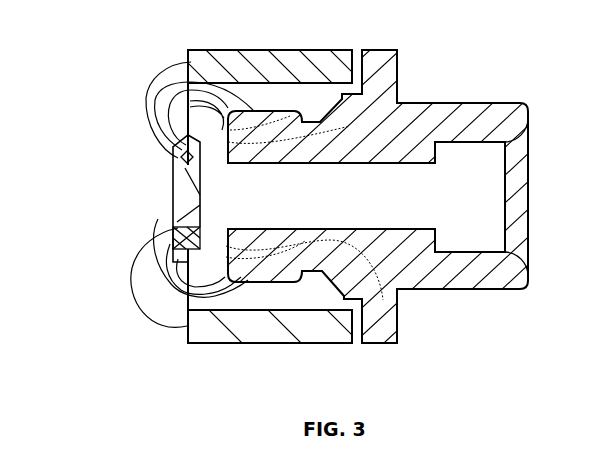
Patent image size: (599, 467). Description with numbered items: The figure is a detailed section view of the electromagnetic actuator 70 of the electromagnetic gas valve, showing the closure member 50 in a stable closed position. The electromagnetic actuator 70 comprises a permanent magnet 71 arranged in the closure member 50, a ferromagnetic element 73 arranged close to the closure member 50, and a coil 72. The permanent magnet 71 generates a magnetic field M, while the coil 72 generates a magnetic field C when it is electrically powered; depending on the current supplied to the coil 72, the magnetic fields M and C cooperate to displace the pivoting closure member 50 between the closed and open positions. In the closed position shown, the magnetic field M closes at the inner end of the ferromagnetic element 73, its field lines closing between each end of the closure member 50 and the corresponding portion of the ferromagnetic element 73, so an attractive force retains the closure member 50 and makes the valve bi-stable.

The electromagnetic actuator 70 is at (299, 180).
The coil 72 is at (250, 70).
The ferromagnetic element 73 is at (453, 115).
The closure member 50 is at (183, 180).
The permanent magnet 71 is at (174, 228).
The magnetic field M is at (175, 107).
The magnetic field C is at (128, 308).